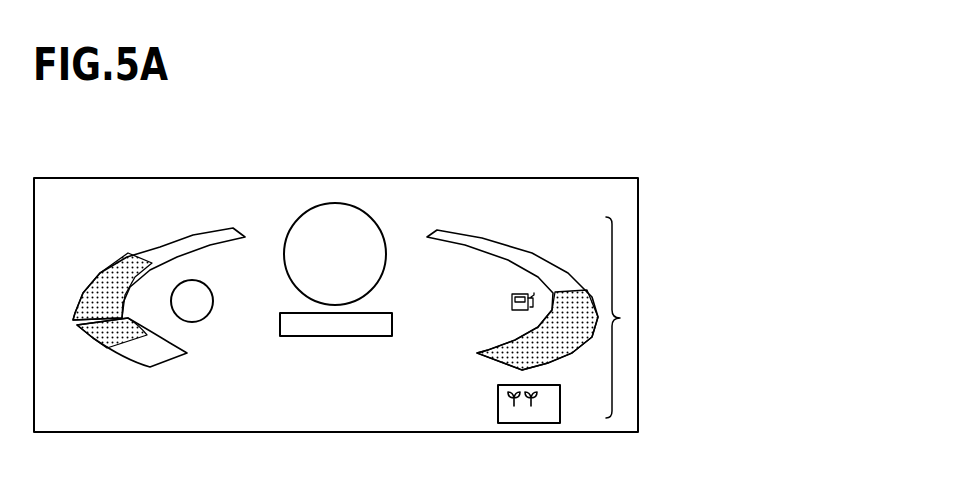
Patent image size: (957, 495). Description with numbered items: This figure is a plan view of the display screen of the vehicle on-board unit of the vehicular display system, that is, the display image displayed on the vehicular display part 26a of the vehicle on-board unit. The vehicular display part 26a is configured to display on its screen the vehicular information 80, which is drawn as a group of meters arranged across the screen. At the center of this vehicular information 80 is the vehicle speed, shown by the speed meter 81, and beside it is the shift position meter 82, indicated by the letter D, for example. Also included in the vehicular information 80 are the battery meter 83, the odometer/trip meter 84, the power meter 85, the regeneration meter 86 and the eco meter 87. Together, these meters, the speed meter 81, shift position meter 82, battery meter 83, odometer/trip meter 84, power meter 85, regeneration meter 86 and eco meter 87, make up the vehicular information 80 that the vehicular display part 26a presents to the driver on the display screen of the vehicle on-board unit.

The vehicular display part 26a is at (592, 178).
The vehicular information 80 is at (622, 318).
The vehicle speed (speed meter) 81 is at (365, 203).
The shift position meter 82 is at (220, 308).
The battery meter 83 is at (508, 235).
The odometer/trip meter 84 is at (335, 348).
The power meter 85 is at (203, 227).
The regeneration meter 86 is at (102, 355).
The eco meter 87 is at (490, 412).